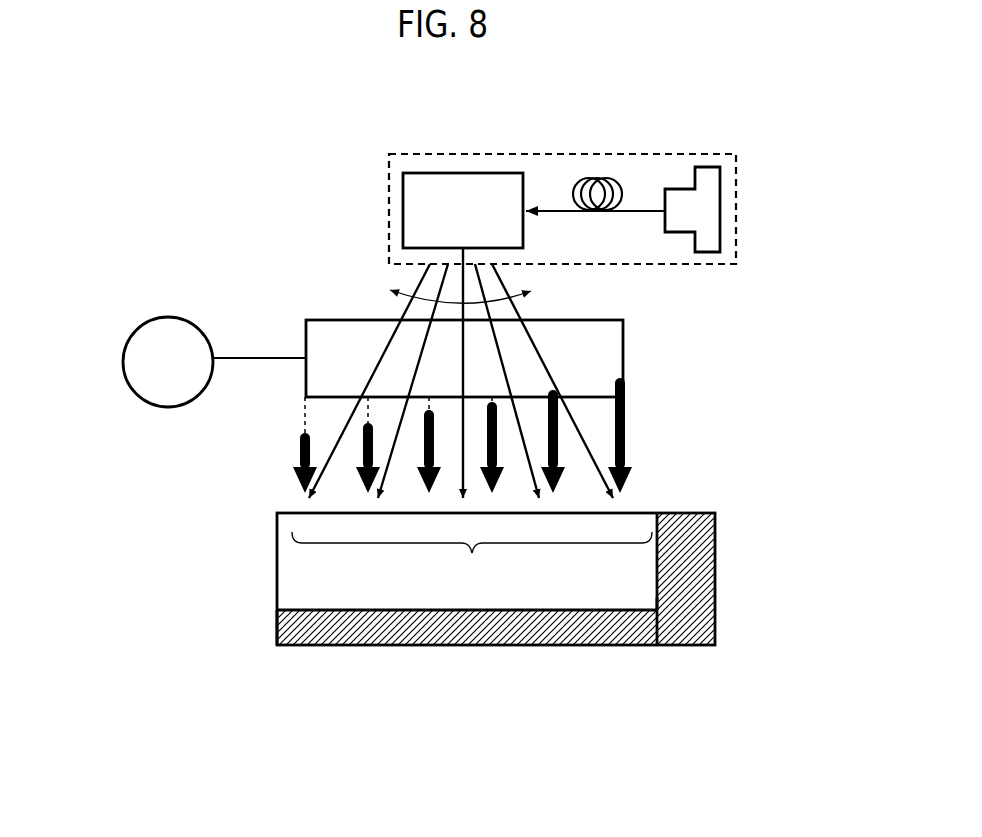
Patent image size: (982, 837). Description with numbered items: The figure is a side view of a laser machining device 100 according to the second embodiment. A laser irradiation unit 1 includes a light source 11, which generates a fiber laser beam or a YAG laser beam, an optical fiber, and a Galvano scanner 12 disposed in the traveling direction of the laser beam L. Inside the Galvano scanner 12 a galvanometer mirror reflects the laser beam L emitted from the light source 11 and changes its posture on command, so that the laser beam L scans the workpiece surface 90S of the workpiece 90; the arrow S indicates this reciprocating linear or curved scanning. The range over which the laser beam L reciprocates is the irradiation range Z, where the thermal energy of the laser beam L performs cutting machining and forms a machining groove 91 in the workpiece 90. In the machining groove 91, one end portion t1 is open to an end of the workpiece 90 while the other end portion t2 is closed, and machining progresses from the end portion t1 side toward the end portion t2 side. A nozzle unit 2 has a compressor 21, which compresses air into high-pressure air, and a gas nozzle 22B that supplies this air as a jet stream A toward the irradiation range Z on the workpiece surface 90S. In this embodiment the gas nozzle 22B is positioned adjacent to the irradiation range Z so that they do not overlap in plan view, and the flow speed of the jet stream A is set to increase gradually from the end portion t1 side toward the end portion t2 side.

The laser machining device 100 is at (549, 102).
The laser irradiation unit 1 is at (718, 154).
The Galvano scanner 12 is at (450, 188).
The light source 11 is at (713, 215).
The nozzle unit 2 is at (244, 277).
The compressor 21 is at (143, 327).
The gas nozzle 22B is at (342, 335).
The jet stream A is at (300, 443).
The laser beam L is at (547, 367).
The arrow indicating scanning S is at (474, 296).
The workpiece 90 is at (720, 572).
The workpiece surface 90S is at (695, 513).
The machining groove 91 is at (360, 597).
The end portion t1 is at (275, 610).
The end portion t2 is at (657, 597).
The irradiation range Z is at (472, 562).